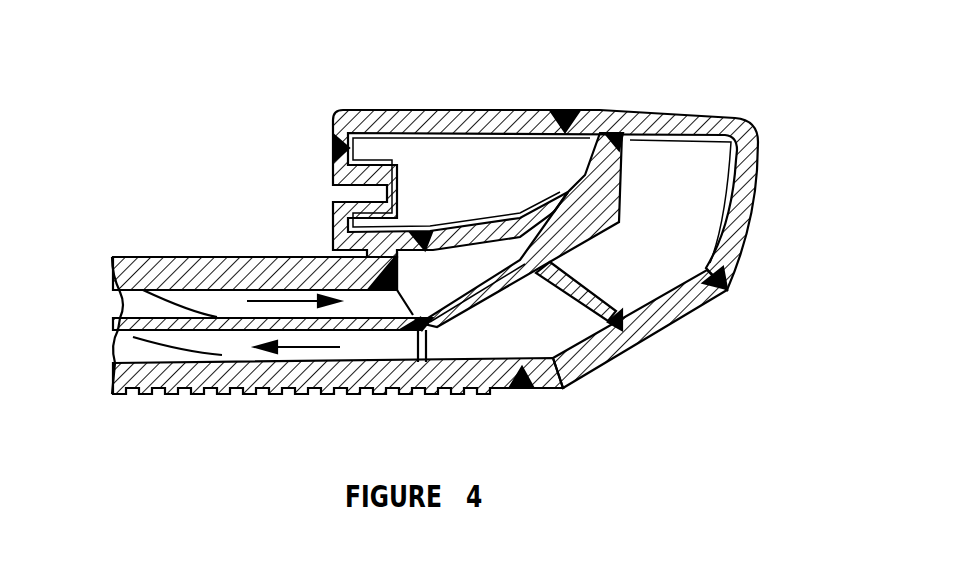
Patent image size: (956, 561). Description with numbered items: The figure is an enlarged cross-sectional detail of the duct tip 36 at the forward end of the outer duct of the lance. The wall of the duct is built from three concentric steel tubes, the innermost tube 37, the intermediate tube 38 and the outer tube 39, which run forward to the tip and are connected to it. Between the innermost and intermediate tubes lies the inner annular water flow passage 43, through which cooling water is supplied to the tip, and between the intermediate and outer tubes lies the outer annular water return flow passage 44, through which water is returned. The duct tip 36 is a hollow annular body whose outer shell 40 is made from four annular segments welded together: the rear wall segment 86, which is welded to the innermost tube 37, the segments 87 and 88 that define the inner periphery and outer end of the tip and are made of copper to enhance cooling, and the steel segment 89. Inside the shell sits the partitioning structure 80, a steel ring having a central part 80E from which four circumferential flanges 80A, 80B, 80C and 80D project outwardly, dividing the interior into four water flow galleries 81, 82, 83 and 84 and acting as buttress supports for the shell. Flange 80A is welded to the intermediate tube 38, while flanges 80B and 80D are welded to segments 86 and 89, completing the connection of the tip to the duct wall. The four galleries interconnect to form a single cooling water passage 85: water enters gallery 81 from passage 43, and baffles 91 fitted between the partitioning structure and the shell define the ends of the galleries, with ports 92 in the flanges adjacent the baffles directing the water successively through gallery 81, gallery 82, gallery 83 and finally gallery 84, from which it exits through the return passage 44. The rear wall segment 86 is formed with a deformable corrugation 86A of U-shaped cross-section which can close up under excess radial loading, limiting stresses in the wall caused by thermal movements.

The duct tip 36 is at (778, 224).
The innermost tube 37 is at (110, 268).
The intermediate tube 38 is at (115, 321).
The outer tube 39 is at (110, 377).
The outer shell 40 is at (730, 290).
The inner annular water flow passage 43 is at (187, 290).
The outer annular water return flow passage 44 is at (225, 350).
The partitioning structure 80 is at (655, 187).
The flange 80A is at (458, 312).
The flange 80B is at (490, 225).
The flange 80C is at (630, 168).
The flange 80D is at (578, 305).
The central part 80E is at (583, 224).
The water flow gallery 81 is at (463, 287).
The water flow gallery 82 is at (488, 183).
The water flow gallery 83 is at (683, 226).
The water flow gallery 84 is at (530, 340).
The cooling water passage 85 is at (685, 316).
The rear wall segment 86 is at (338, 223).
The deformable corrugation 86A is at (340, 192).
The shell segment 87 is at (423, 110).
The shell segment 88 is at (753, 123).
The shell segment 89 is at (632, 342).
The baffles 91 is at (408, 292).
The ports 92 is at (480, 133).